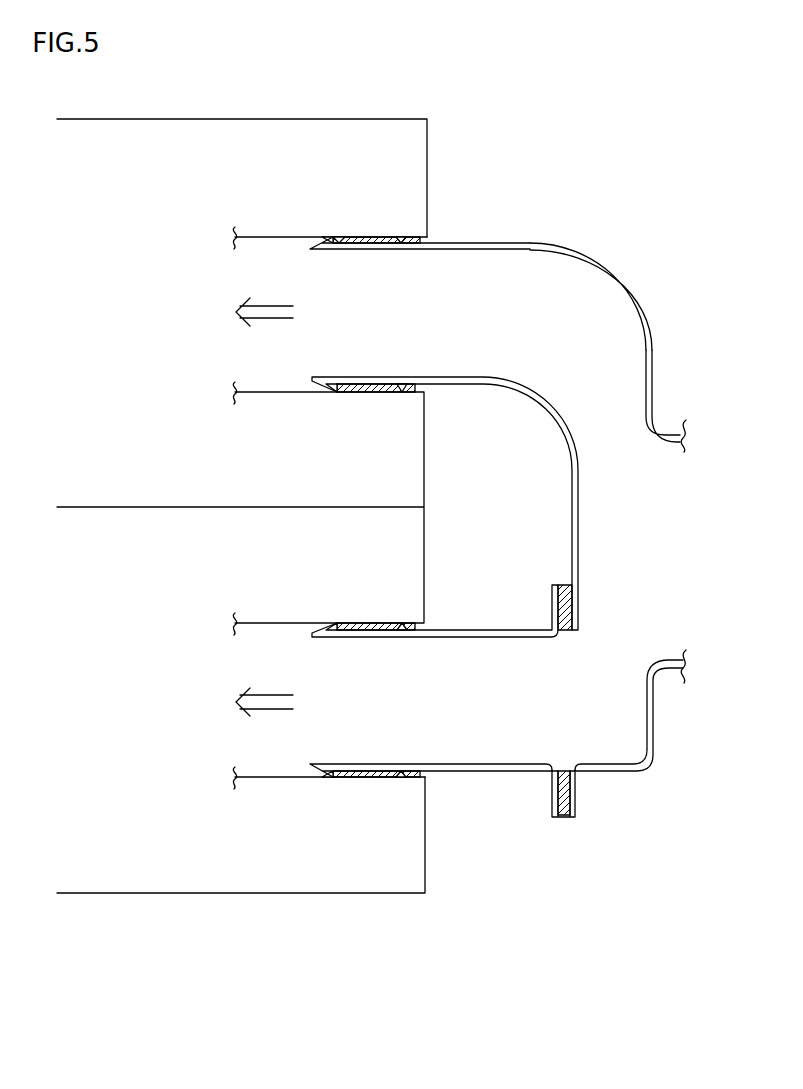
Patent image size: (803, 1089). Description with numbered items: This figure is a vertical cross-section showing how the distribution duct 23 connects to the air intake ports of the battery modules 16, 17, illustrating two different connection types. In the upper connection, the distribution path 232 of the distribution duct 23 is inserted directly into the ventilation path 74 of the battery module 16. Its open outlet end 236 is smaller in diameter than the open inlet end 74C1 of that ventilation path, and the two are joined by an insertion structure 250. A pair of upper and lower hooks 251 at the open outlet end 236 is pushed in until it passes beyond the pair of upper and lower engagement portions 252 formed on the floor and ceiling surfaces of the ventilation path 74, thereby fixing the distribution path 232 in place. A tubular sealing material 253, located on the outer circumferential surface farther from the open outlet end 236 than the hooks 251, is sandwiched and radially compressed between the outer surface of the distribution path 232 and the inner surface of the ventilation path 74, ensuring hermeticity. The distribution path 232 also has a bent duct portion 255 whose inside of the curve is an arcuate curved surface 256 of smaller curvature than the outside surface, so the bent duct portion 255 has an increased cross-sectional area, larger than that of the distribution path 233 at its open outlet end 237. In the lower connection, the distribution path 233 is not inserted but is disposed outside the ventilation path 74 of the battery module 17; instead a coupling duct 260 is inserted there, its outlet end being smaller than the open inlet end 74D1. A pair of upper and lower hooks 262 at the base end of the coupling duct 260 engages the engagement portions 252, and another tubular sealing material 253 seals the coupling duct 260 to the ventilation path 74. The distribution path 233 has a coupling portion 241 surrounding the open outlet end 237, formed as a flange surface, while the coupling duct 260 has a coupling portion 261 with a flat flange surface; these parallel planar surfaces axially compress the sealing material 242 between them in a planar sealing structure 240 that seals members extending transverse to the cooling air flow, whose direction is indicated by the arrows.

The battery module 16 is at (168, 137).
The battery module 17 is at (207, 893).
The ventilation path 74 is at (263, 915).
The open inlet end of ventilation path 74C1 is at (427, 240).
The open inlet end of ventilation path 74D1 is at (427, 778).
The open outlet end 236 is at (325, 297).
The insertion structure 250 is at (339, 226).
The hook 251 is at (331, 237).
The engagement portion 252 is at (346, 237).
The tubular sealing material 253 is at (395, 237).
The hook 262 is at (320, 625).
The distribution path 232 is at (500, 250).
The bent duct portion 255 is at (573, 300).
The distribution duct 23 is at (650, 341).
The arcuate curved surface 256 is at (548, 412).
The sealing material 242 is at (565, 586).
The open outlet end 237 is at (566, 690).
The coupling duct 260 is at (483, 770).
The coupling portion 261 is at (560, 790).
The coupling portion 241 is at (572, 804).
The planar sealing structure 240 is at (563, 821).
The distribution path 233 is at (618, 727).